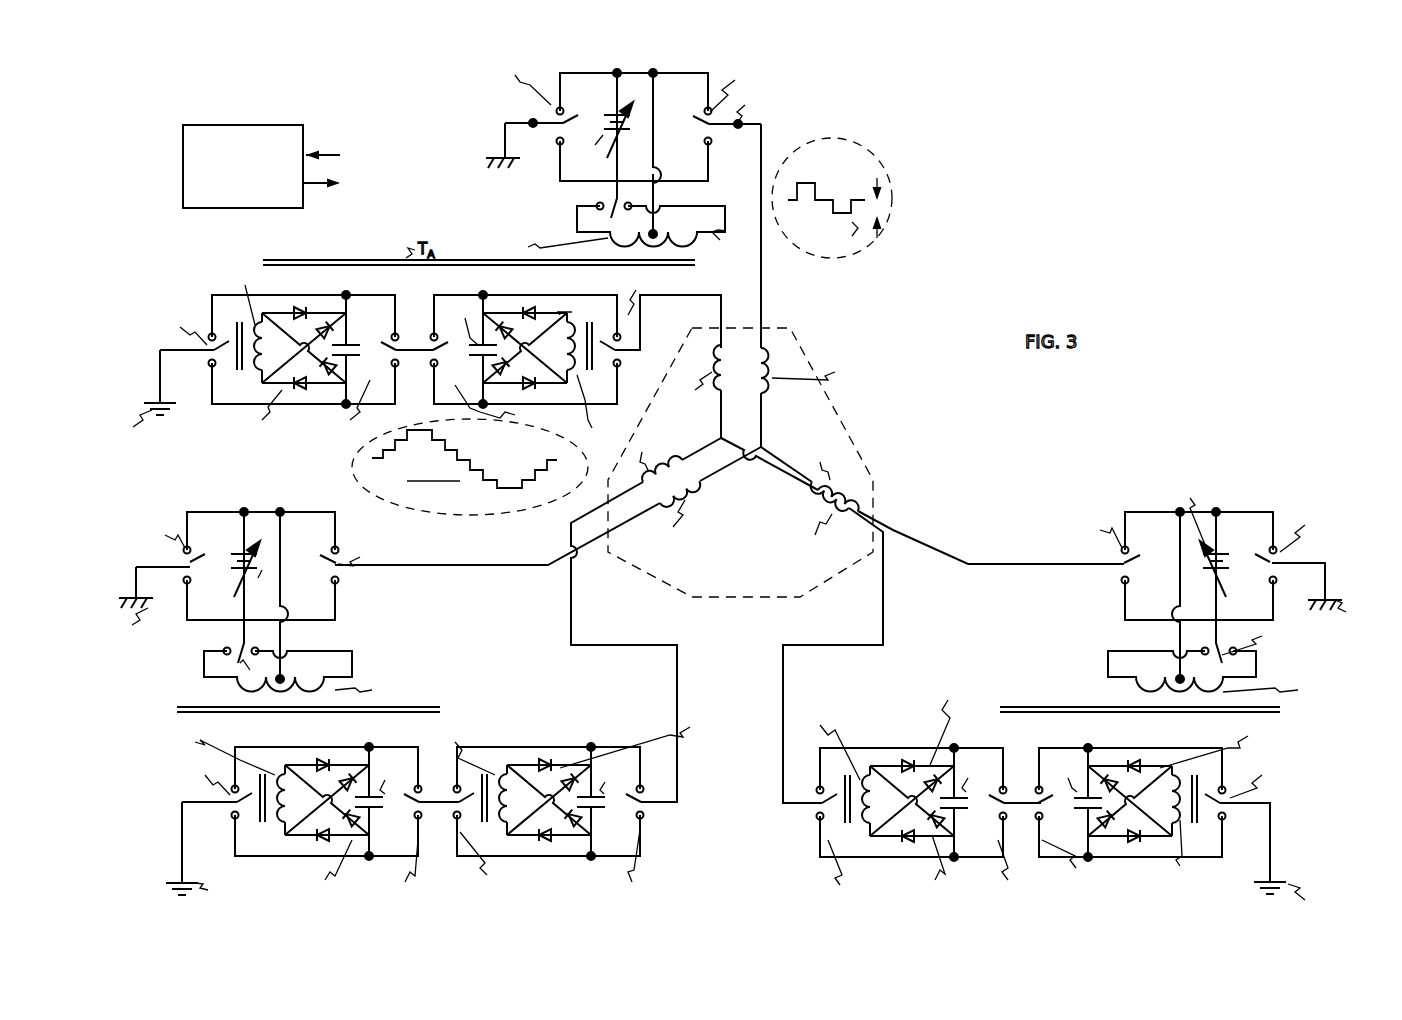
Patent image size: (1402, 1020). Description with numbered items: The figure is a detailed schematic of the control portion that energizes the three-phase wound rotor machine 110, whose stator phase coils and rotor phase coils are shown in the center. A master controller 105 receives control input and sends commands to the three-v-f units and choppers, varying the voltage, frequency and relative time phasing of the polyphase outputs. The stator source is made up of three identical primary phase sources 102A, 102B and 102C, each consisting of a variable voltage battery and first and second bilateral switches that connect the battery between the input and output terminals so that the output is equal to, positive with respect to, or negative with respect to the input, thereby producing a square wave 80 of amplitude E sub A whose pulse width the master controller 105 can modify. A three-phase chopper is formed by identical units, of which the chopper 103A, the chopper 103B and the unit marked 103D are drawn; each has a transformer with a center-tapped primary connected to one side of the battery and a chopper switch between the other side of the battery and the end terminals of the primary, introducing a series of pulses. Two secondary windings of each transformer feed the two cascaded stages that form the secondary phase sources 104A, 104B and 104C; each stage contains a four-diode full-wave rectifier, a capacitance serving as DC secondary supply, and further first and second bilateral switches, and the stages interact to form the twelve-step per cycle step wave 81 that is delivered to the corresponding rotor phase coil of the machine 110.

The master controller 105 is at (274, 214).
The primary phase source 102A is at (560, 178).
The chopper 103A is at (685, 206).
The secondary phase source 104A is at (225, 412).
The square wave 80 is at (822, 201).
The step wave 81 is at (467, 448).
The motor portion 110 is at (862, 448).
The primary phase source 102B is at (365, 610).
The chopper 103B is at (325, 648).
The secondary phase source 104B is at (608, 730).
The primary phase source 102C is at (1090, 604).
The phase C chopper 103D is at (1165, 646).
The secondary phase source 104C is at (795, 840).